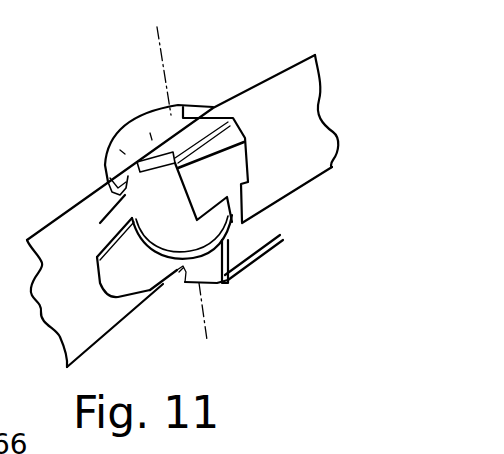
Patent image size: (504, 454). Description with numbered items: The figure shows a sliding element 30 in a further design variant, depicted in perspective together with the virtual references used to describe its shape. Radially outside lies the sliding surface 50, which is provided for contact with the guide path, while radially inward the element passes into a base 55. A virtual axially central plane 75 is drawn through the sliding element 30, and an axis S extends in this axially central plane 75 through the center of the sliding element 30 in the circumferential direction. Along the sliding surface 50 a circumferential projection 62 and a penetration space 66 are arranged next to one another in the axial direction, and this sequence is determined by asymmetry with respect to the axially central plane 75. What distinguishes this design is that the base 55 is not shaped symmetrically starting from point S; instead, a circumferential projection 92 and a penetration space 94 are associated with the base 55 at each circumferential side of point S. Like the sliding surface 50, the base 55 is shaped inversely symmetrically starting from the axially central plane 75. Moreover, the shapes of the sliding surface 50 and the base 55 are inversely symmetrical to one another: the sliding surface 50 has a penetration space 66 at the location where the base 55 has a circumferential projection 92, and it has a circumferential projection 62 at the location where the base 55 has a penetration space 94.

The sliding element 30 is at (137, 133).
The sliding surface 50 is at (150, 133).
The axis S is at (167, 78).
The base 55 is at (161, 269).
The circumferential projection 62 is at (110, 181).
The penetration space 66 is at (122, 152).
The axially central plane 75 is at (307, 127).
The circumferential projection 92 is at (133, 269).
The penetration space 94 is at (205, 272).